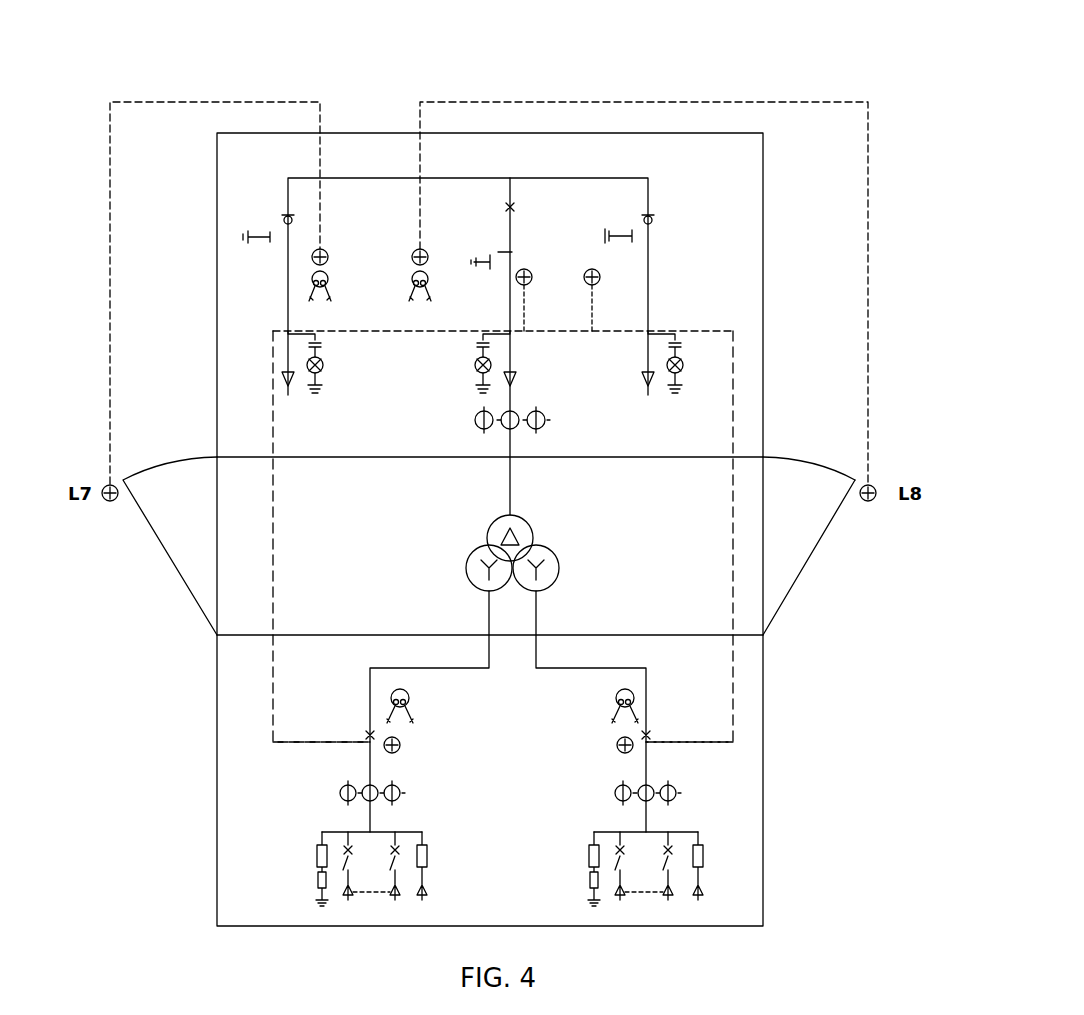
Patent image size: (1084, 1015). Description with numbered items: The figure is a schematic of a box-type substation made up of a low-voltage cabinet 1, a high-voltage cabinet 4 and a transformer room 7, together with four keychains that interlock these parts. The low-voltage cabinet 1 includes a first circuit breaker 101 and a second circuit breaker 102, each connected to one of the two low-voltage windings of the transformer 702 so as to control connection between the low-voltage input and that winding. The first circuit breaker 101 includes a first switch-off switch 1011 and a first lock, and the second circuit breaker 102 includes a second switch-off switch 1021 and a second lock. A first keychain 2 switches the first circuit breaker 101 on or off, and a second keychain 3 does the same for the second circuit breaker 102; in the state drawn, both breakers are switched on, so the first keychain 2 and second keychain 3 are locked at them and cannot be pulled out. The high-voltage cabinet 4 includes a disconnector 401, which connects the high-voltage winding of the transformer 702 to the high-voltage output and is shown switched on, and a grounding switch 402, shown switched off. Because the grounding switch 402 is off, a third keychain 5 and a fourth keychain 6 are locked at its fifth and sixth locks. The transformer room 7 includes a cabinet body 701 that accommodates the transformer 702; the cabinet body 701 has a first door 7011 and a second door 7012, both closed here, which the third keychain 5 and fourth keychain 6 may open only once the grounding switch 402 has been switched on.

The low-voltage cabinet 1 is at (501, 753).
The first keychain 2 is at (383, 708).
The second keychain 3 is at (640, 708).
The high-voltage cabinet 4 is at (500, 388).
The third keychain 5 is at (302, 290).
The fourth keychain 6 is at (445, 290).
The transformer room 7 is at (501, 575).
The first circuit breaker 101 is at (316, 751).
The second circuit breaker 102 is at (742, 738).
The disconnector 401 is at (527, 252).
The grounding switch 402 is at (488, 251).
The cabinet body 701 is at (788, 595).
The transformer 702 is at (466, 572).
The first switch-off switch 1011 is at (363, 735).
The second switch-off switch 1021 is at (655, 736).
The first door 7011 is at (168, 520).
The second door 7012 is at (780, 537).